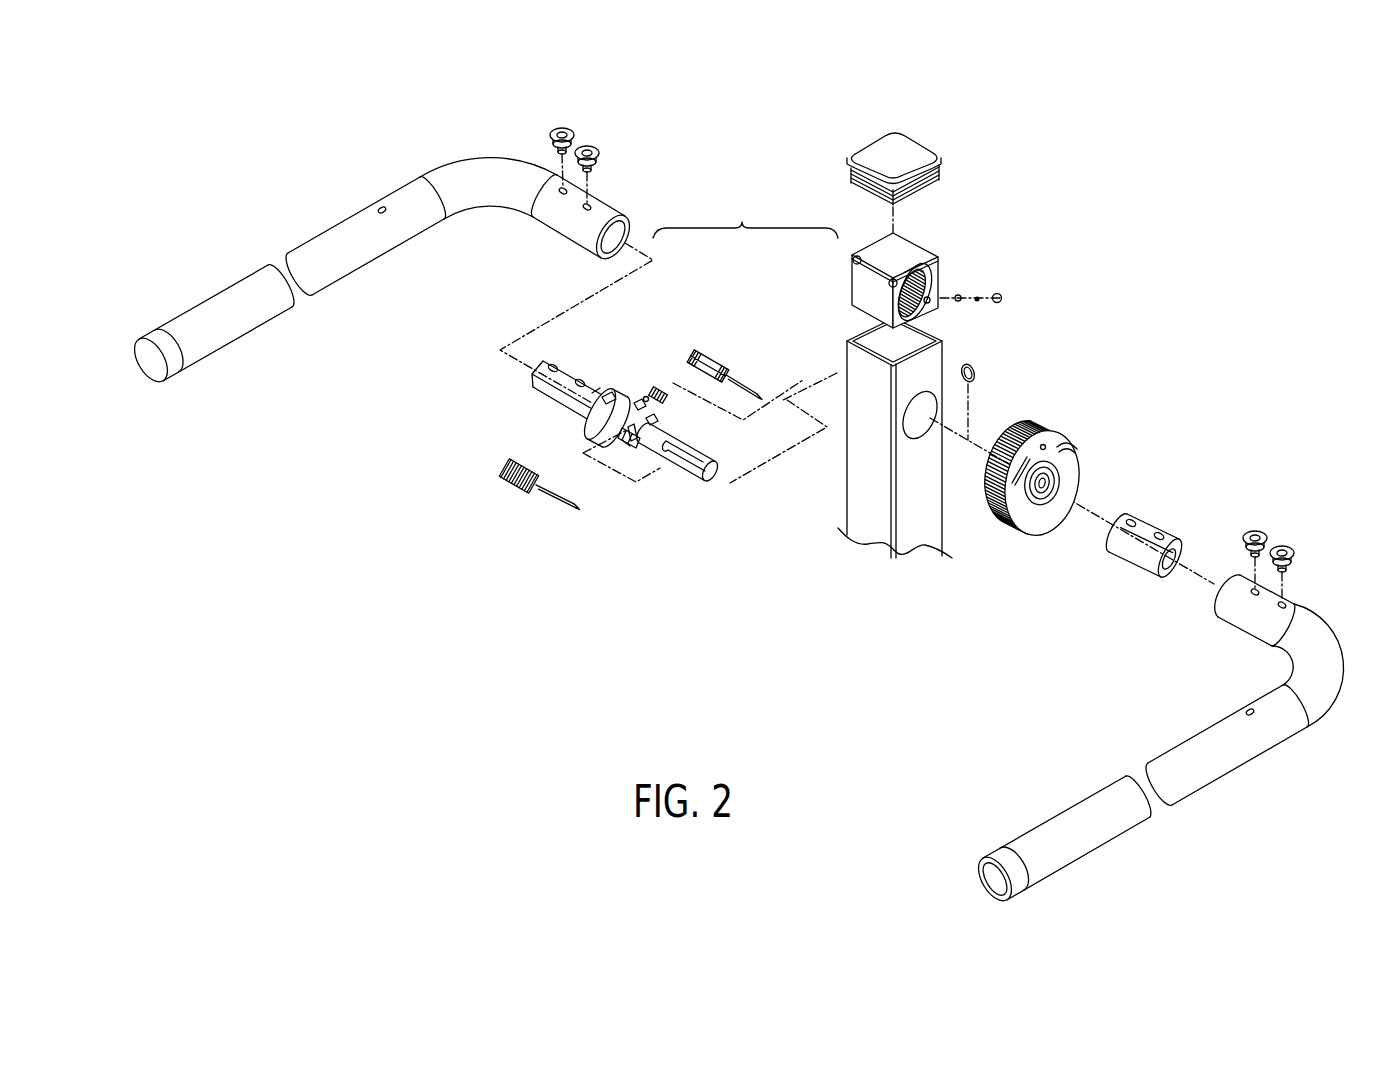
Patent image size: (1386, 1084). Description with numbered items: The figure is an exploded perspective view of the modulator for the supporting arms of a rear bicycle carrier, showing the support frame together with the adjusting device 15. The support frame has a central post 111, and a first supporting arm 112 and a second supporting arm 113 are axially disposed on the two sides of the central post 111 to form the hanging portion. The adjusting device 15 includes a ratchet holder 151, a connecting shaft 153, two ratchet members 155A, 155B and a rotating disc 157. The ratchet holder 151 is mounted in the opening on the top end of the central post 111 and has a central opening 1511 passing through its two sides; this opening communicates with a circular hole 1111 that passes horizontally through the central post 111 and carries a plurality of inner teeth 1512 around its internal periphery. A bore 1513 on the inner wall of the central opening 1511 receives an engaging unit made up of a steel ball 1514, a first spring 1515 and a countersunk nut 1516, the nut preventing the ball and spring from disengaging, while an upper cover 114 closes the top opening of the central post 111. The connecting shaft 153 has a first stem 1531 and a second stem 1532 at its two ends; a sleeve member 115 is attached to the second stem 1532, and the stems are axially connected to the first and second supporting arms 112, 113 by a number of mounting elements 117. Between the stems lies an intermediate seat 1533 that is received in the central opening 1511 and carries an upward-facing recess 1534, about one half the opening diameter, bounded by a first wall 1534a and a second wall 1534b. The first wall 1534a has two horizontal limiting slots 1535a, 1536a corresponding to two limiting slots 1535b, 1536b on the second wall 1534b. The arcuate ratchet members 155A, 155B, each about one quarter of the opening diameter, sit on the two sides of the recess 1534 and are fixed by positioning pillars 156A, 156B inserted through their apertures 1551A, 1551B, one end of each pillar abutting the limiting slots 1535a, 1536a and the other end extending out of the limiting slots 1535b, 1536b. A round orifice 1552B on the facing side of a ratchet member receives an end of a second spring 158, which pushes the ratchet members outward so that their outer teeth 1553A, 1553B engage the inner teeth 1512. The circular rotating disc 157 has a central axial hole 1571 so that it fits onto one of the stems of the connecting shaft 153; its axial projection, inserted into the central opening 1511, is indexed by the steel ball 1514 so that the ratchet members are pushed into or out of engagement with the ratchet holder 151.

The central post 111 is at (930, 517).
The circular hole 1111 is at (911, 432).
The first supporting arm 112 is at (375, 250).
The second supporting arm 113 is at (1200, 737).
The upper cover 114 is at (917, 155).
The sleeve member 115 is at (1145, 521).
The mounting elements 117 is at (587, 144).
The adjusting device 15 is at (669, 333).
The ratchet holder 151 is at (923, 238).
The central opening 1511 is at (917, 308).
The inner teeth 1512 is at (922, 272).
The bore 1513 is at (930, 295).
The steel ball 1514 is at (960, 296).
The first spring 1515 is at (1002, 298).
The countersunk nut 1516 is at (978, 303).
The connecting shaft 153 is at (677, 488).
The first stem 1531 is at (548, 362).
The second stem 1532 is at (697, 473).
The intermediate seat 1533 is at (620, 440).
The recess 1534 is at (592, 435).
The first wall 1534a is at (602, 392).
The second wall 1534b is at (643, 410).
The limiting slot 1535a is at (598, 409).
The limiting slot 1535b is at (633, 445).
The limiting slot 1536a is at (637, 407).
The limiting slot 1536b is at (650, 420).
The ratchet member 155A is at (494, 470).
The ratchet member 155B is at (705, 343).
The aperture 1551A is at (538, 492).
The aperture 1551B is at (735, 372).
The round orifice 1552B is at (650, 396).
The outer teeth 1553A is at (508, 486).
The outer teeth 1553B is at (707, 360).
The positioning pillar 156A is at (568, 503).
The positioning pillar 156B is at (750, 398).
The rotating disc 157 is at (1093, 440).
The axial hole 1571 is at (1040, 492).
The second spring 158 is at (665, 400).